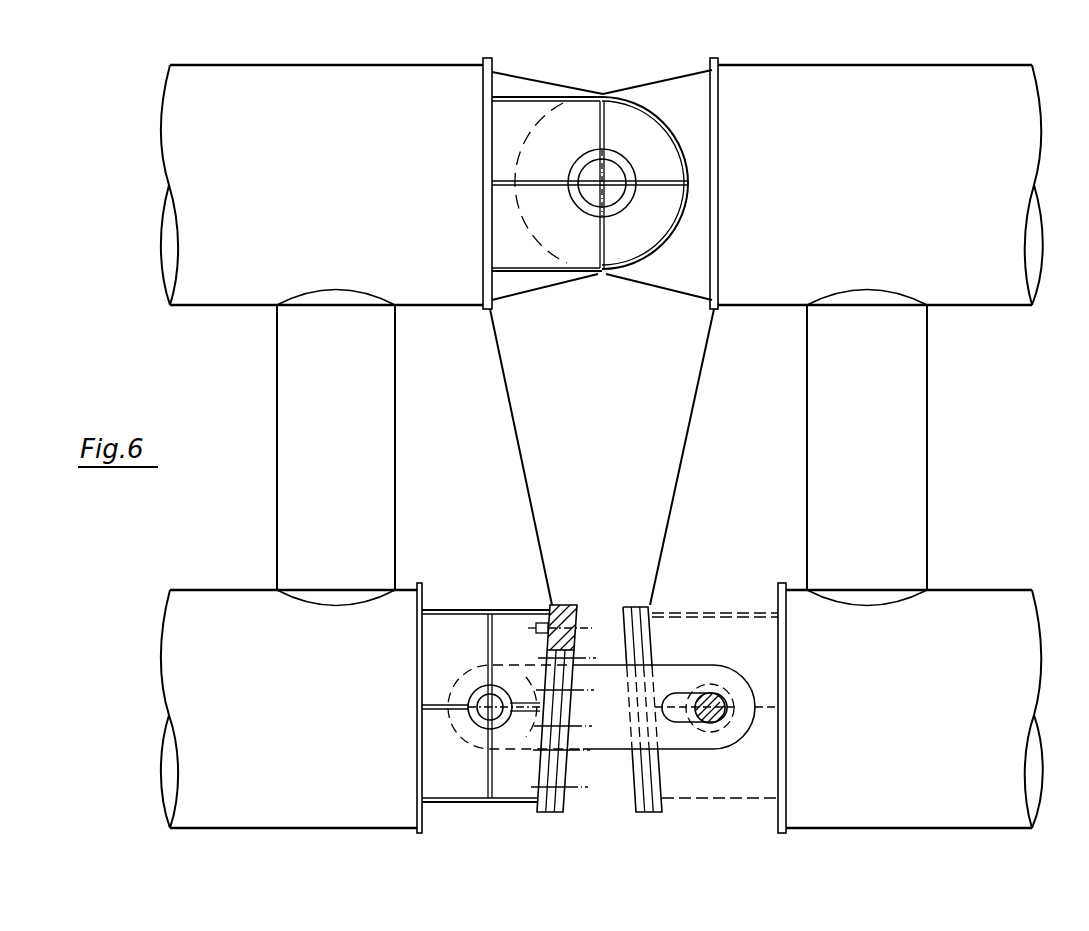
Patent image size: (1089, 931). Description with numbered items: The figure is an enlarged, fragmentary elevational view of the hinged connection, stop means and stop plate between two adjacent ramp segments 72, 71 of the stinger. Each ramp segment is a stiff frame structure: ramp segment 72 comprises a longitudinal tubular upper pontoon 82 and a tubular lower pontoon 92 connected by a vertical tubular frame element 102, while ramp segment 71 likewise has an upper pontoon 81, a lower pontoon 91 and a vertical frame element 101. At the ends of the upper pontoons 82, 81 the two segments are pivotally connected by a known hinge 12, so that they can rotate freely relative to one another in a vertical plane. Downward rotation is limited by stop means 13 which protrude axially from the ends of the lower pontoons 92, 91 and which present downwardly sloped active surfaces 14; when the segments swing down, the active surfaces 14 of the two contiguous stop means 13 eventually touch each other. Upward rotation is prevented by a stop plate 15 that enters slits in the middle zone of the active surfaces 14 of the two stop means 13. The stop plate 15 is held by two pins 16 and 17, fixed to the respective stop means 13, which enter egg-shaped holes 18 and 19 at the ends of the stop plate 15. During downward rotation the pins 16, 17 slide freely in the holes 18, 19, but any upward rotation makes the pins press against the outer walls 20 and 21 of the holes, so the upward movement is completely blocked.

The ramp segment 72 is at (233, 358).
The ramp segment 71 is at (1022, 448).
The upper pontoon 82 is at (172, 122).
The upper pontoon 81 is at (1022, 112).
The vertical frame element 102 is at (380, 440).
The vertical frame element 101 is at (912, 428).
The lower pontoon 92 is at (168, 650).
The lower pontoon 91 is at (1018, 658).
The hinge 12 is at (618, 115).
The stop means 13 is at (462, 788).
The active surface 14 is at (565, 775).
The stop plate 15 is at (611, 738).
The pin 16 is at (482, 713).
The pin 17 is at (725, 716).
The egg-shaped hole 18 is at (521, 717).
The egg-shaped hole 19 is at (681, 697).
The outer wall 20 is at (477, 700).
The outer wall 21 is at (727, 703).